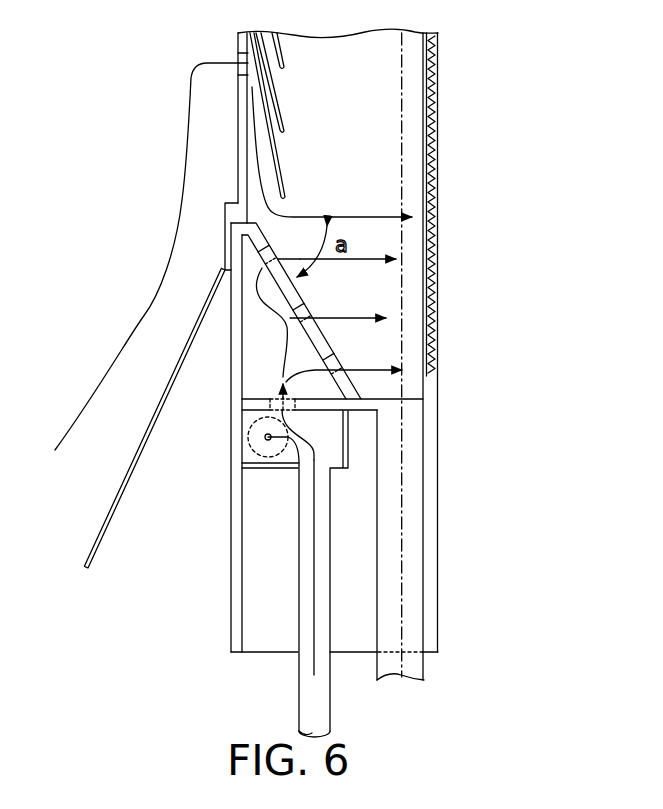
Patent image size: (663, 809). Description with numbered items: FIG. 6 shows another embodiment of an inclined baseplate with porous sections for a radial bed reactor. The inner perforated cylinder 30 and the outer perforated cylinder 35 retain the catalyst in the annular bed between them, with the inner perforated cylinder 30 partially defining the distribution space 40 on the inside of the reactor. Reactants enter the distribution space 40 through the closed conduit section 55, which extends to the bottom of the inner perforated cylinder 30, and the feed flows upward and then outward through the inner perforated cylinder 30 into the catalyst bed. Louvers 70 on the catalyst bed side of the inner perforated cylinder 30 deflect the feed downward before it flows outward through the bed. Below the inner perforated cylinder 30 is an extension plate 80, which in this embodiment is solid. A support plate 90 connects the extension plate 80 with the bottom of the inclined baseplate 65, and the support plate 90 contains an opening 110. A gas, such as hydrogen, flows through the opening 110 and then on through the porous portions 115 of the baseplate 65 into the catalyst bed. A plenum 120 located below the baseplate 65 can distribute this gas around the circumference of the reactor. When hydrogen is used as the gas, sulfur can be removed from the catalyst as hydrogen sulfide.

The inner perforated cylinder 30 is at (238, 102).
The outer perforated cylinder 35 is at (438, 101).
The distribution space 40 is at (146, 256).
The closed conduit section 55 is at (175, 375).
The baseplate 65 is at (268, 239).
The louvers 70 is at (276, 98).
The extension plate 80 is at (230, 349).
The support plate 90 is at (362, 414).
The opening 110 is at (281, 397).
The porous portions 115 is at (261, 270).
The plenum 120 is at (248, 437).